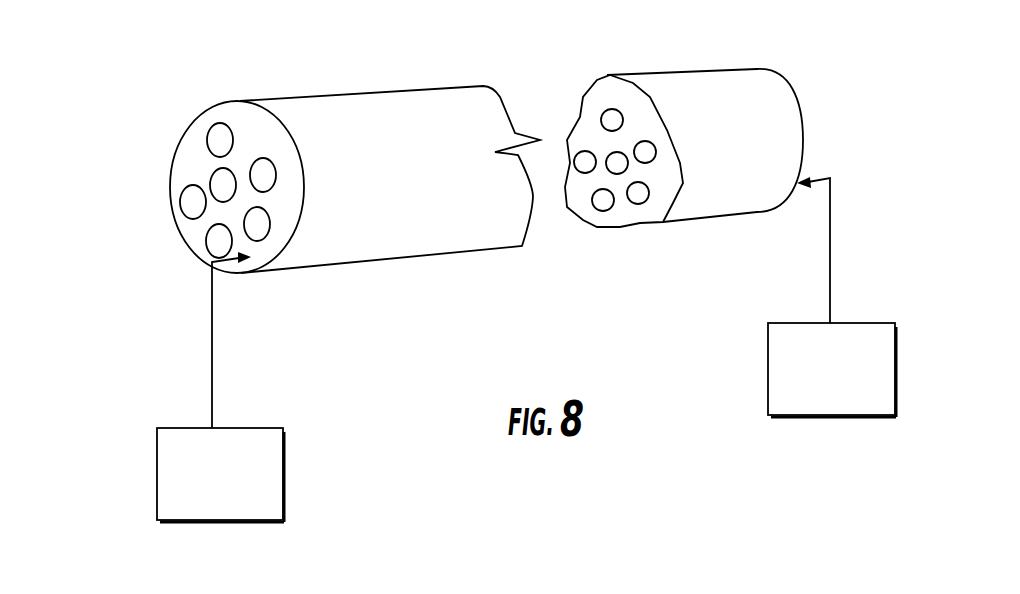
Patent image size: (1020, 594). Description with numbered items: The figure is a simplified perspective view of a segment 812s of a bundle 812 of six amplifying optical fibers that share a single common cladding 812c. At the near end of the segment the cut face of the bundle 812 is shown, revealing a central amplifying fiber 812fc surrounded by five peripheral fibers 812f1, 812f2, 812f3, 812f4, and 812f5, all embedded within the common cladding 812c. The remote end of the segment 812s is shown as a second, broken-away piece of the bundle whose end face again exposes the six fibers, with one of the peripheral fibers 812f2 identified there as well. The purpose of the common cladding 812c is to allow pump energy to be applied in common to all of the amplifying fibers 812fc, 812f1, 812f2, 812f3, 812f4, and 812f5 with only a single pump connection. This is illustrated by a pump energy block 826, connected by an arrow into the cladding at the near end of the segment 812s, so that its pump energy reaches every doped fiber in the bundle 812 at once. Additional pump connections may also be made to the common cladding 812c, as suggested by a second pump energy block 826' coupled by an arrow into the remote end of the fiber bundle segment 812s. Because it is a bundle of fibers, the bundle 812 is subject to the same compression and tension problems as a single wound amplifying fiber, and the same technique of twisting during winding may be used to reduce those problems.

The bundle of amplifying optical fibers 812 is at (78, 122).
The segment of fiber bundle 812s is at (760, 57).
The common cladding 812c is at (418, 230).
The peripheral amplifying fiber 812f1 is at (213, 138).
The peripheral amplifying fiber 812f2 is at (276, 170).
The peripheral amplifying fiber 812f3 is at (260, 241).
The peripheral amplifying fiber 812f4 is at (215, 243).
The peripheral amplifying fiber 812f5 is at (186, 201).
The central amplifying fiber 812fc is at (217, 179).
The pump block 826 is at (253, 387).
The pump block 826' is at (806, 297).